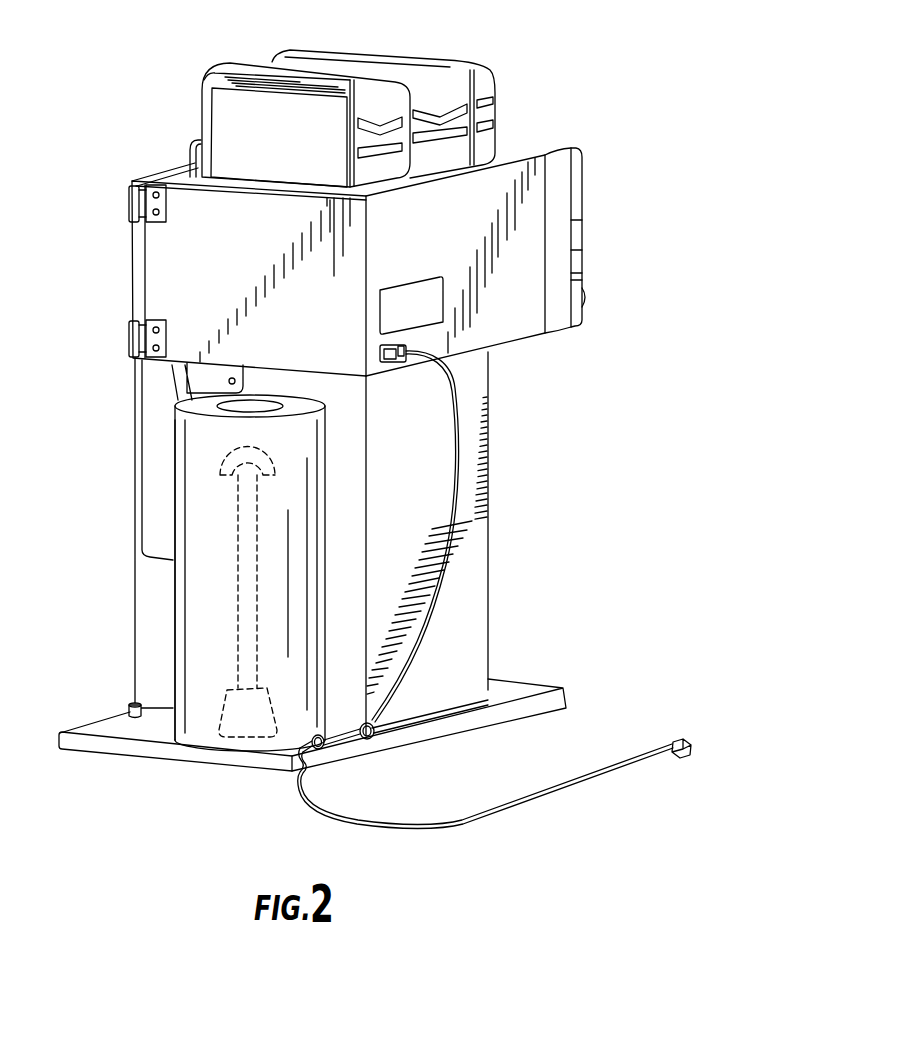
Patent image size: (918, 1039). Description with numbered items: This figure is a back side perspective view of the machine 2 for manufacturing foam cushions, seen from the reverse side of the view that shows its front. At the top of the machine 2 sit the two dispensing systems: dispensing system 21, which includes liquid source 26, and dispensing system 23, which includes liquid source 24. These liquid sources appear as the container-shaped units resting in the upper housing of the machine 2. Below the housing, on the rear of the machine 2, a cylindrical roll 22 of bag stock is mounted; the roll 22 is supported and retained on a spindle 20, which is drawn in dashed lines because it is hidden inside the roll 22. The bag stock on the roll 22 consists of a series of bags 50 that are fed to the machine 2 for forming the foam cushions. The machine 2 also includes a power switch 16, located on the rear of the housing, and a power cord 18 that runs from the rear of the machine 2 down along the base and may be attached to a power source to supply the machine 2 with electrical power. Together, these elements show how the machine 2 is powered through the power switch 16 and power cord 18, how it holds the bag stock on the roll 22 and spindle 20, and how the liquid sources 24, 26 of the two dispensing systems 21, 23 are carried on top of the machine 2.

The machine 2 is at (615, 212).
The power switch 16 is at (455, 366).
The power cord 18 is at (610, 780).
The spindle 20 is at (248, 577).
The dispensing system 21 is at (497, 80).
The roll 22 is at (215, 449).
The dispensing system 23 is at (200, 120).
The liquid source 24 is at (200, 83).
The liquid source 26 is at (472, 63).
The bags 50 is at (203, 687).